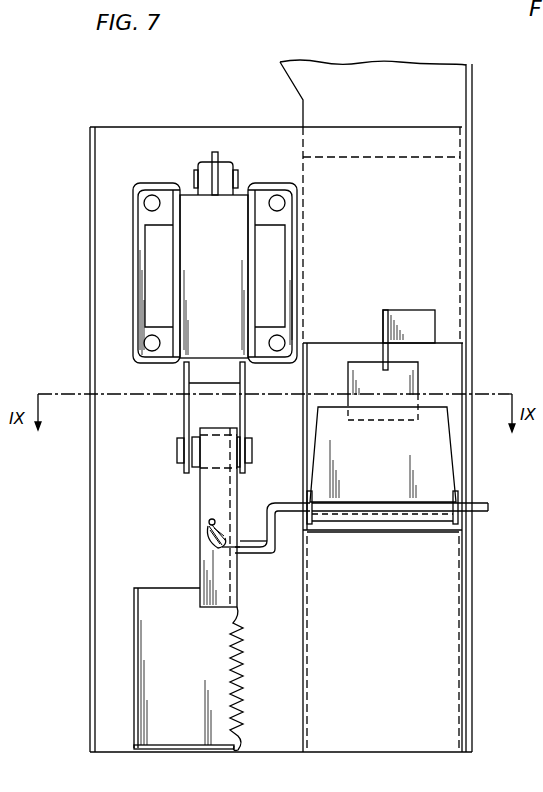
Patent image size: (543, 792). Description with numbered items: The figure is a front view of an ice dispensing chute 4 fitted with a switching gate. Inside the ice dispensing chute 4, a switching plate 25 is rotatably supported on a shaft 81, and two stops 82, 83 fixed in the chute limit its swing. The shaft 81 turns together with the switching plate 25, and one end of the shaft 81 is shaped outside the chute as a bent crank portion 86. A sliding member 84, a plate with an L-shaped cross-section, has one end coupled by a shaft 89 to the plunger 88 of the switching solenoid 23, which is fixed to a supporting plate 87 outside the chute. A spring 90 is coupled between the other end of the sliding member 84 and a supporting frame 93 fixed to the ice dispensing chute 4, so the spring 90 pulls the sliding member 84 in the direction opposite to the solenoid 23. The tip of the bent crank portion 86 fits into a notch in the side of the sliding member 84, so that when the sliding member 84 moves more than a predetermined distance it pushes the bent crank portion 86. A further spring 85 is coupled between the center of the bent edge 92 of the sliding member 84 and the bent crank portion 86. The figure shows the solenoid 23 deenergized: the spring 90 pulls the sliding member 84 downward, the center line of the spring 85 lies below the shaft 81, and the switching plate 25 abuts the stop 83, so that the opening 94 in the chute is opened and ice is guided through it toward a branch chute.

The ice dispensing chute 4 is at (442, 238).
The switching solenoid 23 is at (188, 240).
The switching plate 25 is at (427, 443).
The shaft 81 is at (488, 510).
The stop 82 is at (390, 352).
The stop 83 is at (403, 410).
The sliding member 84 is at (232, 575).
The spring 85 is at (200, 532).
The bent crank portion 86 is at (247, 548).
The supporting plate 87 is at (175, 130).
The plunger 88 is at (185, 413).
The shaft 89 is at (177, 452).
The spring 90 is at (233, 688).
The bent edge 92 is at (200, 597).
The supporting frame 93 is at (167, 746).
The opening 94 is at (455, 462).